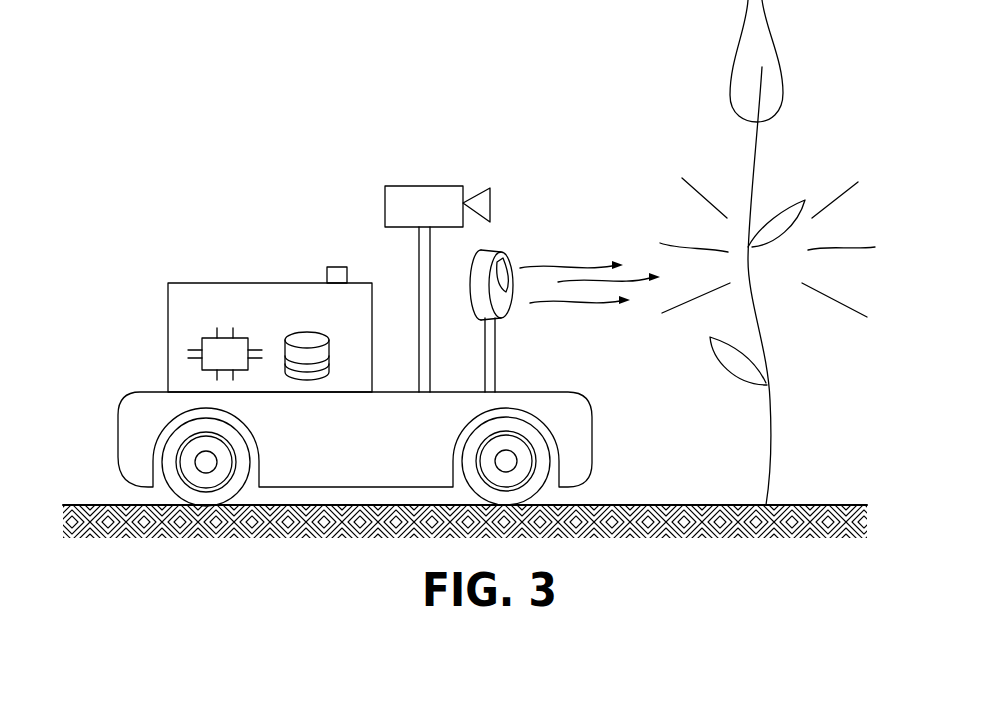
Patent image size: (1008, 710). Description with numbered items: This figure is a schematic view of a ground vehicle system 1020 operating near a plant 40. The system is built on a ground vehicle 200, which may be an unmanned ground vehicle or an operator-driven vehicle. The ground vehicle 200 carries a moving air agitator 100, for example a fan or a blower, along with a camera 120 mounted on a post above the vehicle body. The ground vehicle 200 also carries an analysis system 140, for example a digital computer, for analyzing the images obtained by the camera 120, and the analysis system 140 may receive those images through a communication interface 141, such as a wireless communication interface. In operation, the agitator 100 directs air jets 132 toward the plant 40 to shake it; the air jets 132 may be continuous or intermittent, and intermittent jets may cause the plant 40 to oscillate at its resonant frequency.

The ground vehicle system 1020 is at (152, 240).
The ground vehicle 200 is at (140, 395).
The analysis system 140 is at (268, 273).
The communication interface 141 is at (337, 267).
The camera 120 is at (430, 178).
The moving air agitator 100 is at (513, 252).
The air jets 132 is at (600, 253).
The plant 40 is at (763, 163).